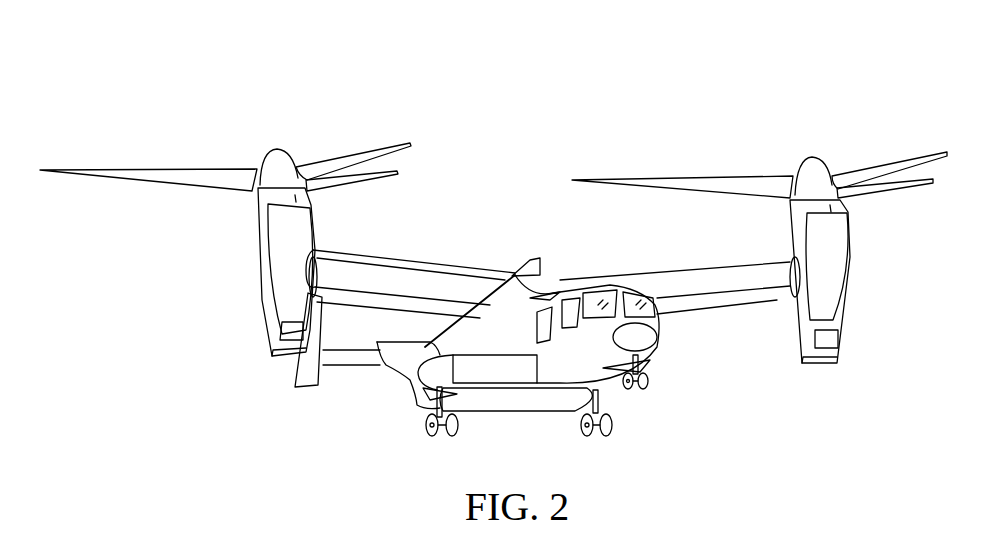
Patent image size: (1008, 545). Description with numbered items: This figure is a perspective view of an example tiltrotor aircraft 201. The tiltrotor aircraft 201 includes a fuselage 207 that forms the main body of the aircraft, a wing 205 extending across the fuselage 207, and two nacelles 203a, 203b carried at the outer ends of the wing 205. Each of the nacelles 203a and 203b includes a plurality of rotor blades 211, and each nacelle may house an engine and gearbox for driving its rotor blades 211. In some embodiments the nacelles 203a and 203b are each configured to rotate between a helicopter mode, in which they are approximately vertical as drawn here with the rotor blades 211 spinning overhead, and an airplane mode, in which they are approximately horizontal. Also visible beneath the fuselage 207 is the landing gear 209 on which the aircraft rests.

The tiltrotor aircraft 201 is at (627, 108).
The nacelle 203a is at (233, 261).
The nacelle 203b is at (862, 275).
The wing 205 is at (430, 263).
The fuselage 207 is at (663, 342).
The landing gear 209 is at (423, 427).
The rotor blades 211 is at (182, 168).